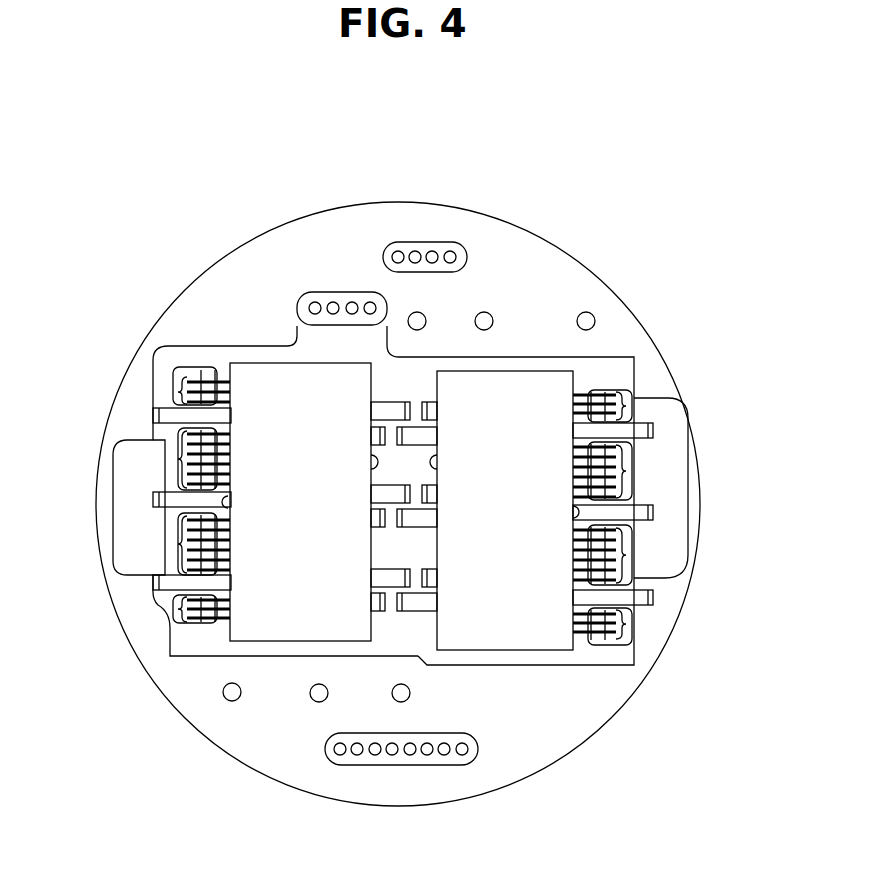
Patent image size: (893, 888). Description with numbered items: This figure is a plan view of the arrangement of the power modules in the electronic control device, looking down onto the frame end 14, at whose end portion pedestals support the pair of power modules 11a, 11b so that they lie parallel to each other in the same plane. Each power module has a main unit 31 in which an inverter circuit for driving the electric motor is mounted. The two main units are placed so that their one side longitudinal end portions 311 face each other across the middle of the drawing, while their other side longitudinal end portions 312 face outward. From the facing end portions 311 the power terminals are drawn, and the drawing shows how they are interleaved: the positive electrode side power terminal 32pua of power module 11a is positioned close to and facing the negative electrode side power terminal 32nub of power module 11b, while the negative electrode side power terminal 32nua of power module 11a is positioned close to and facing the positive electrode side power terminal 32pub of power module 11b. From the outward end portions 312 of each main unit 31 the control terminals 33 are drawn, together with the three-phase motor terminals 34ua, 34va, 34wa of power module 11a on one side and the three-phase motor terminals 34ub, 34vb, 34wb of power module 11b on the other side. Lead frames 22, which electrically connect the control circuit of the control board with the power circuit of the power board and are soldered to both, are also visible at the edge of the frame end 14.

The frame end 14 is at (537, 233).
The power module 11a is at (288, 649).
The power module 11b is at (530, 655).
The lead frame 22 is at (409, 242).
The main unit 31 is at (264, 382).
The one side longitudinal end portion 311 is at (364, 462).
The other side longitudinal end portion 312 is at (229, 502).
The positive electrode side power terminal 32pua is at (388, 578).
The negative electrode side power terminal 32nua is at (372, 601).
The negative electrode side power terminal 32nub is at (430, 577).
The positive electrode side power terminal 32pub is at (413, 603).
The control terminal 33 is at (178, 384).
The three-phase motor terminal 34wa is at (153, 413).
The three-phase motor terminal 34va is at (153, 498).
The three-phase motor terminal 34ua is at (153, 583).
The three-phase motor terminal 34wb is at (640, 428).
The three-phase motor terminal 34vb is at (640, 513).
The three-phase motor terminal 34ub is at (637, 597).